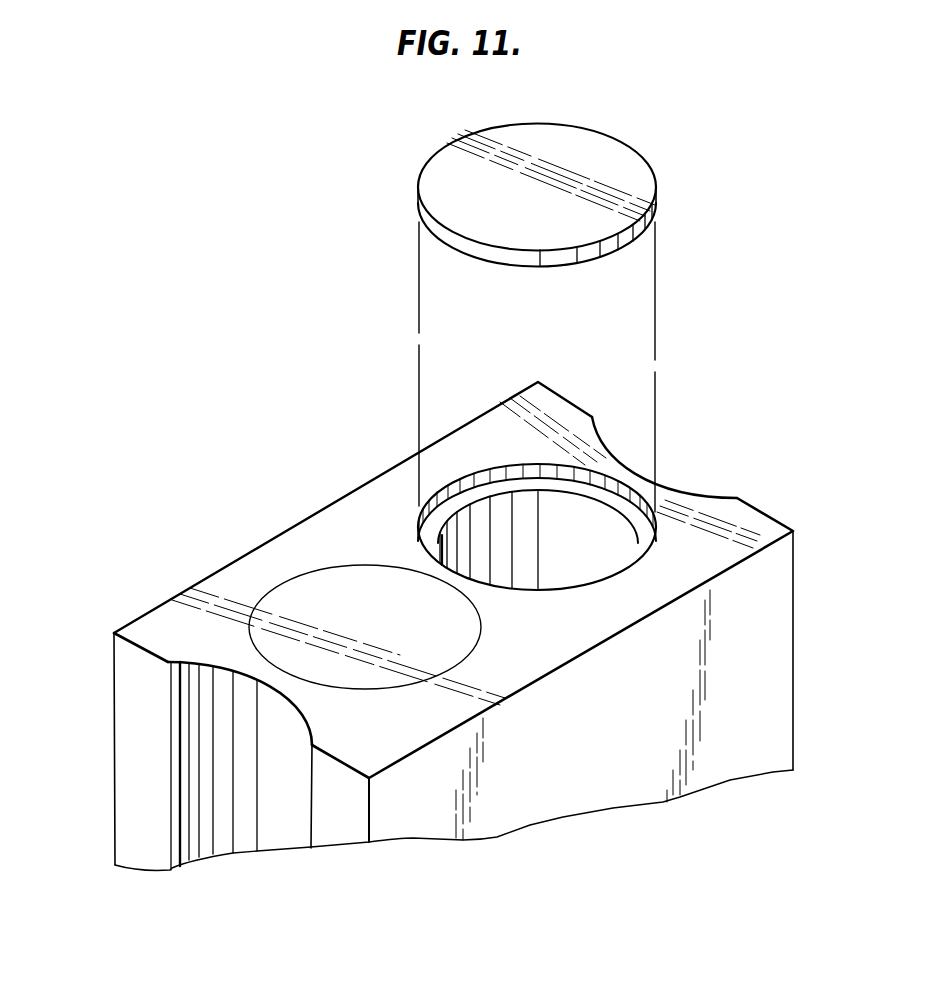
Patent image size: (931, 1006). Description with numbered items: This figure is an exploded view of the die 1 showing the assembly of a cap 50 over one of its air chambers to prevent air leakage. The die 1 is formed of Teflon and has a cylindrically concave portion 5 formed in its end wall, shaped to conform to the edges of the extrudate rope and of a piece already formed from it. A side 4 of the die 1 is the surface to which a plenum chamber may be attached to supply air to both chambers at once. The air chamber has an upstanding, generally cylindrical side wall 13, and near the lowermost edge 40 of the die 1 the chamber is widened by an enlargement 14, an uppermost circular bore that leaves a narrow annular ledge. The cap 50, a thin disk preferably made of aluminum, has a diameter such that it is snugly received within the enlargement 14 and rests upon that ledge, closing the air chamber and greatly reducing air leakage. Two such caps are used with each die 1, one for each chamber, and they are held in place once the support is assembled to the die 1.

The die 1 is at (253, 513).
The side 4 is at (616, 727).
The cylindrically concave portion 5 is at (688, 492).
The side wall 13 is at (572, 506).
The enlargement 14 is at (608, 480).
The lowermost edge 40 is at (382, 527).
The cap 50 is at (605, 155).